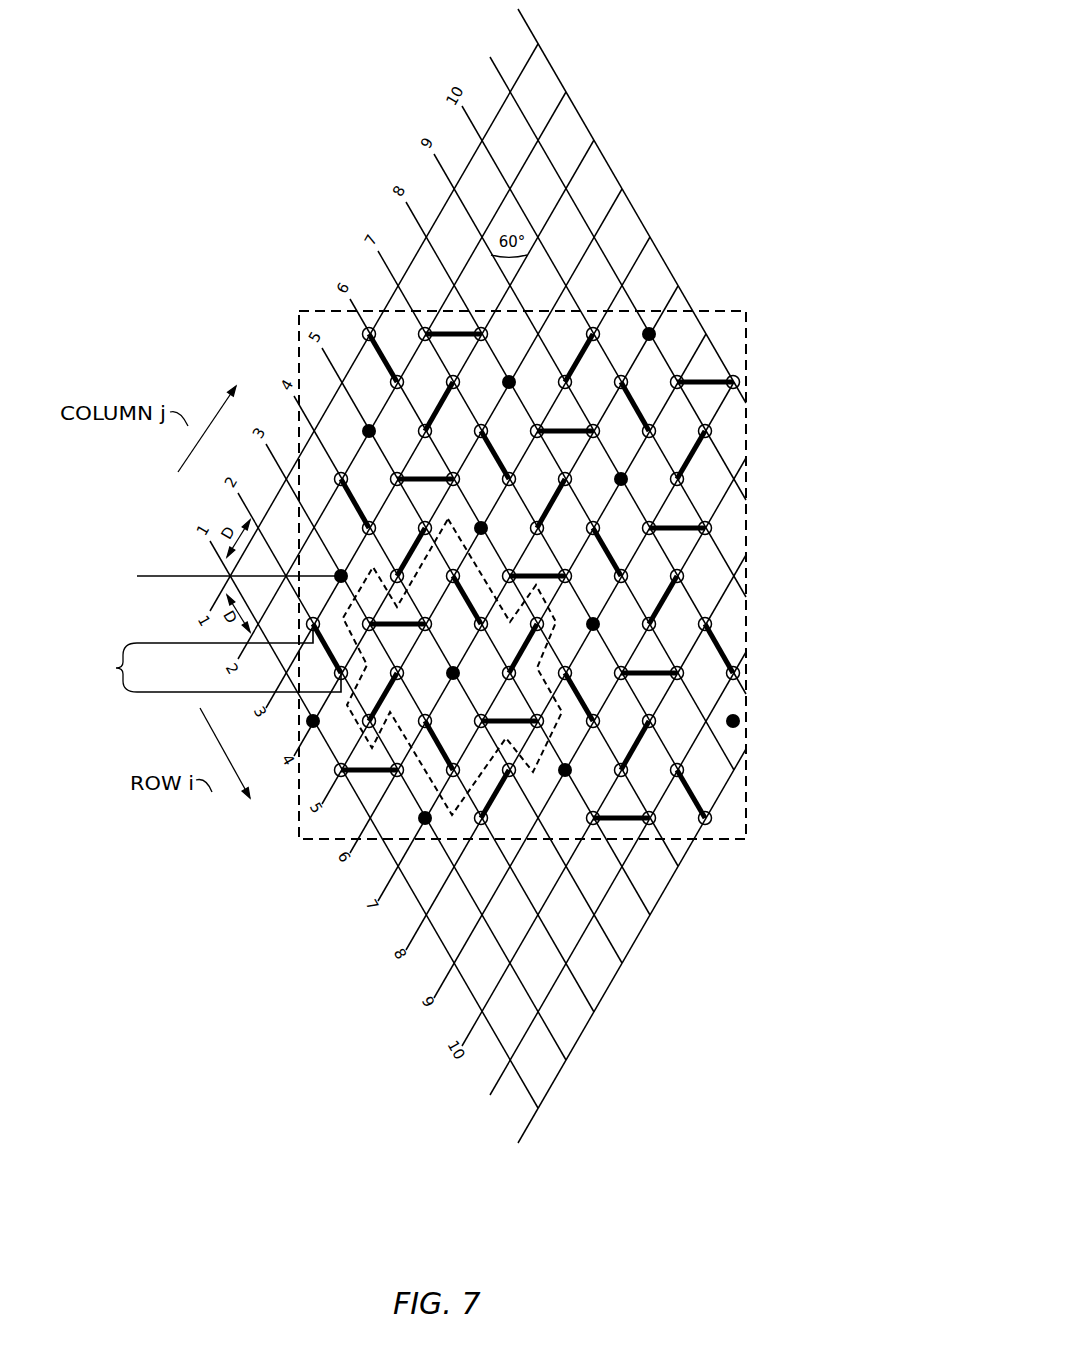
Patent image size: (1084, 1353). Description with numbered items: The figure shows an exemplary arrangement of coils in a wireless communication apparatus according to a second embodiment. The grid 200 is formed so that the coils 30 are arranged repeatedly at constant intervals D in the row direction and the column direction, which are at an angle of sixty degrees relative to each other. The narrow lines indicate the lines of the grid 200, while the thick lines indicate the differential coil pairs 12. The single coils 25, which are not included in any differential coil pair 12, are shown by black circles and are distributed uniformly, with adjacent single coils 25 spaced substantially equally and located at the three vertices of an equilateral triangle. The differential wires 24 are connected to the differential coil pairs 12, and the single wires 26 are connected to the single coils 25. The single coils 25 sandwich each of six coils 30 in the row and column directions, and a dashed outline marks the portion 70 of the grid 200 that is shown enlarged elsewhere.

The differential coil pair 12 is at (716, 632).
The differential wires 24 is at (215, 658).
The single coil 25 is at (744, 726).
The single wires 26 is at (166, 575).
The coil 30 is at (741, 385).
The portion 70 is at (454, 820).
The grid 200 is at (453, 1233).